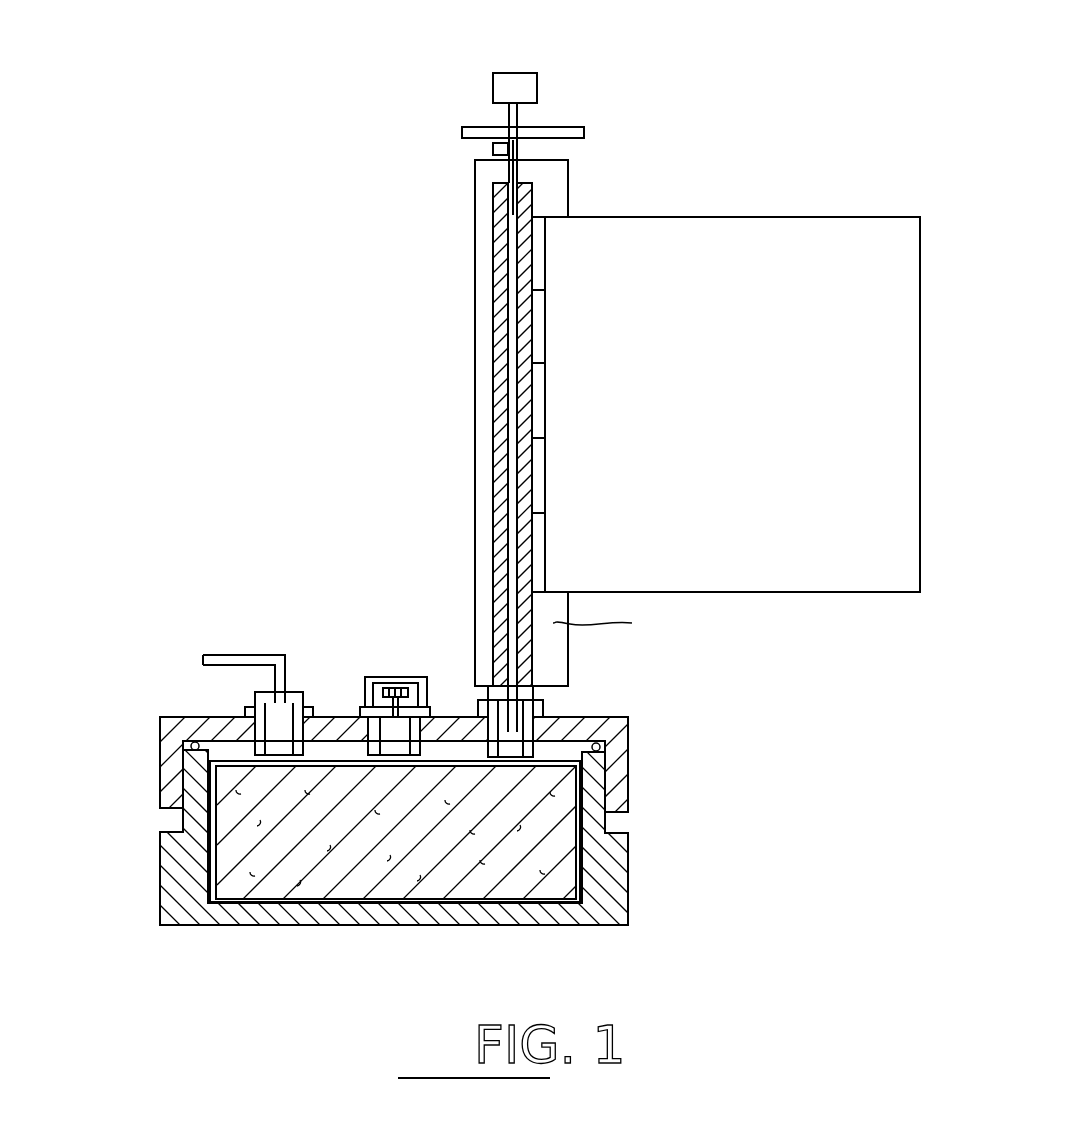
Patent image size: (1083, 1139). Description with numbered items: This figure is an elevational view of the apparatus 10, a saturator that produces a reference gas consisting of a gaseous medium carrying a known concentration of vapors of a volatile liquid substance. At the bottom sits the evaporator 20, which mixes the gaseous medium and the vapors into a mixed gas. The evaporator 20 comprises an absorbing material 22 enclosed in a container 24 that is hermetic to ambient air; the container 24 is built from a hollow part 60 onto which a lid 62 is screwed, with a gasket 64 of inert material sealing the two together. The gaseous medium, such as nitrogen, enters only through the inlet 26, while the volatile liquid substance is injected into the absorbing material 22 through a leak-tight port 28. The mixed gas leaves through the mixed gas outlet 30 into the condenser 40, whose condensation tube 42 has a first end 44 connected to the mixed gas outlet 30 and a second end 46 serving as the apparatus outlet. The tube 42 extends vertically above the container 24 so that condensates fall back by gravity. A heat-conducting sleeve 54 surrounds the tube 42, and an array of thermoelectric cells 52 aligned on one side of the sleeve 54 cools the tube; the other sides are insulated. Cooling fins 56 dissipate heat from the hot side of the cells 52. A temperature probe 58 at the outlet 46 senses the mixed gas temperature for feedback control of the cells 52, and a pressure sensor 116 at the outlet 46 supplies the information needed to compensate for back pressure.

The apparatus 10 is at (176, 420).
The evaporator 20 is at (646, 782).
The absorbing material 22 is at (280, 892).
The container 24 is at (618, 803).
The inlet 26 is at (182, 660).
The leak-tight port 28 is at (357, 663).
The mixed gas outlet 30 is at (512, 752).
The condenser 40 is at (462, 372).
The condensation tube 42 is at (505, 465).
The first end 44 is at (510, 713).
The second end 46 is at (520, 151).
The thermoelectric cells 52 is at (540, 317).
The heat-conducting sleeve 54 is at (500, 522).
The cooling fins 56 is at (712, 420).
The temperature probe 58 is at (530, 88).
The hollow part 60 is at (168, 894).
The lid 62 is at (167, 758).
The gasket 64 is at (608, 750).
The pressure sensor 116 is at (508, 152).